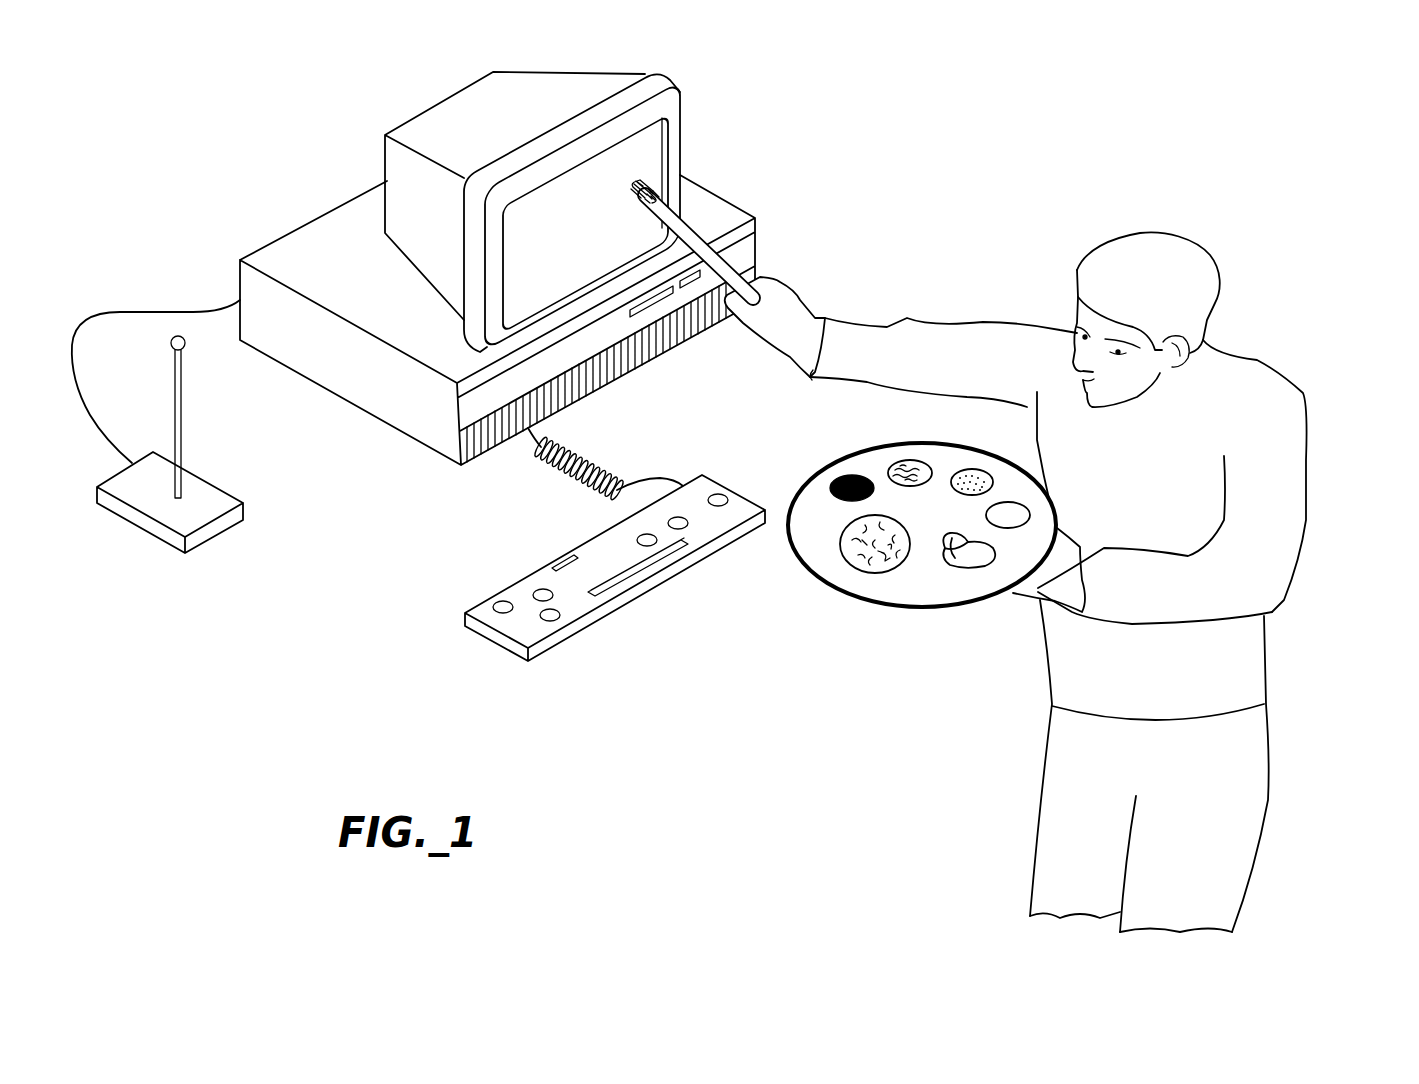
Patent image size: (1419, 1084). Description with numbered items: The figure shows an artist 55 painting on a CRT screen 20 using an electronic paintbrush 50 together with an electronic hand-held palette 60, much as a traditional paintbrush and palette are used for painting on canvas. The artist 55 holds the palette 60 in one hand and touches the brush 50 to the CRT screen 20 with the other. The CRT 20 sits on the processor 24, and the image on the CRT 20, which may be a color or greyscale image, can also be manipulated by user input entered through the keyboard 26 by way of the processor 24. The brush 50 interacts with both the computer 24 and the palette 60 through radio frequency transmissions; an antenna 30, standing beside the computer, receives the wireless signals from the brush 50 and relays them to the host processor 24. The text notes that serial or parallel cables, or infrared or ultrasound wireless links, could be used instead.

The CRT screen 20 is at (372, 111).
The processor 24 is at (437, 457).
The keyboard 26 is at (587, 623).
The antenna 30 is at (213, 543).
The electronic paintbrush 50 is at (702, 224).
The artist 55 is at (1290, 613).
The electronic hand-held palette 60 is at (897, 613).